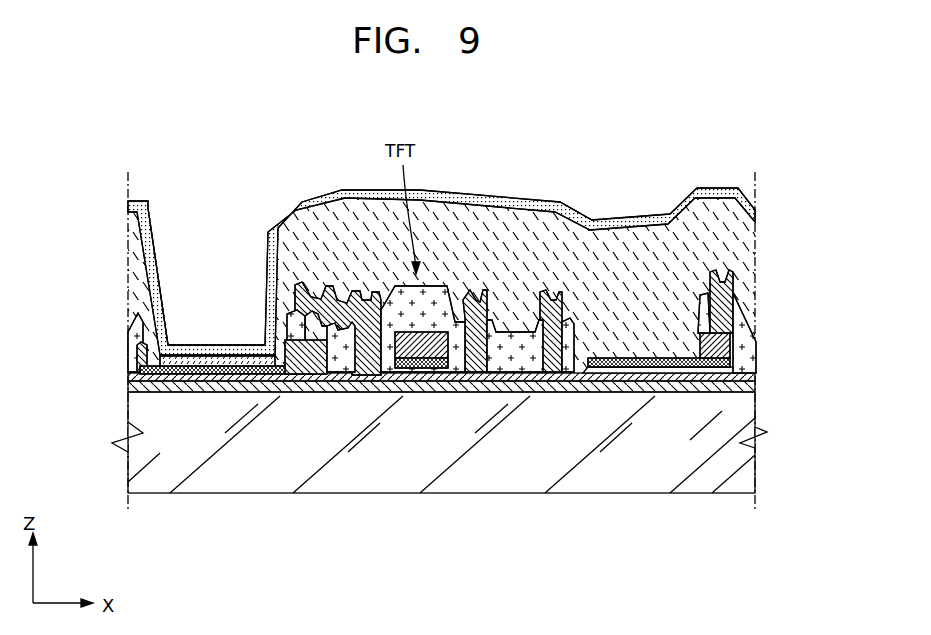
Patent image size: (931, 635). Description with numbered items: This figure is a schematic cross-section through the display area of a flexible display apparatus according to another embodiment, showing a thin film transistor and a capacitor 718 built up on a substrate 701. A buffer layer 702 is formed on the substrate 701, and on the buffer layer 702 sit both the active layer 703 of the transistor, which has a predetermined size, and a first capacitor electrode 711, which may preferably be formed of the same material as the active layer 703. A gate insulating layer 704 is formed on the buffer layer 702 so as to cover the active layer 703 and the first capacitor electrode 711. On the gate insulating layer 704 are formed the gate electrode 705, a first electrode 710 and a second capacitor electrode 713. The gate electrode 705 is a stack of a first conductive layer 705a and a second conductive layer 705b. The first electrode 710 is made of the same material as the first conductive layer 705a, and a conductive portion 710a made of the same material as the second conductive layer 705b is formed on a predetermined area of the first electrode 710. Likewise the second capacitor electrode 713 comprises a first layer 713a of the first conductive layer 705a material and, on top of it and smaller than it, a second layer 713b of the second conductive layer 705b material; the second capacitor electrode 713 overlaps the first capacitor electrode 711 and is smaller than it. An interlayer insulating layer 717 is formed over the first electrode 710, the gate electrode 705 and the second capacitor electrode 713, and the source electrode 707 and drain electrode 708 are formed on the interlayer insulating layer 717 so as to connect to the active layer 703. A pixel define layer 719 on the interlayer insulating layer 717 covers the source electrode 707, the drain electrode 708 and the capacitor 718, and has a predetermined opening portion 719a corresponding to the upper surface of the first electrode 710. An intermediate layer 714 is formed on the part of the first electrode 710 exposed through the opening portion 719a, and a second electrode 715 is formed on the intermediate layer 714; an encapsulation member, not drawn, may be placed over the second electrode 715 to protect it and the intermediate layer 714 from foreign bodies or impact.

The substrate 701 is at (133, 463).
The buffer layer 702 is at (132, 388).
The active layer 703 is at (477, 372).
The gate insulating layer 704 is at (131, 378).
The gate electrode 705 is at (429, 456).
The first conductive layer 705a is at (417, 352).
The second conductive layer 705b is at (430, 360).
The source electrode 707 is at (476, 303).
The drain electrode 708 is at (347, 265).
The first electrode 710 is at (190, 355).
The conductive portion 710a is at (311, 353).
The first capacitor electrode 711 is at (613, 372).
The second capacitor electrode 713 is at (670, 457).
The first layer 713a is at (678, 372).
The second layer 713b is at (723, 370).
The intermediate layer 714 is at (216, 362).
The second electrode 715 is at (238, 352).
The interlayer insulating layer 717 is at (758, 358).
The capacitor 718 is at (668, 477).
The pixel define layer 719 is at (534, 225).
The opening portion 719a is at (130, 237).